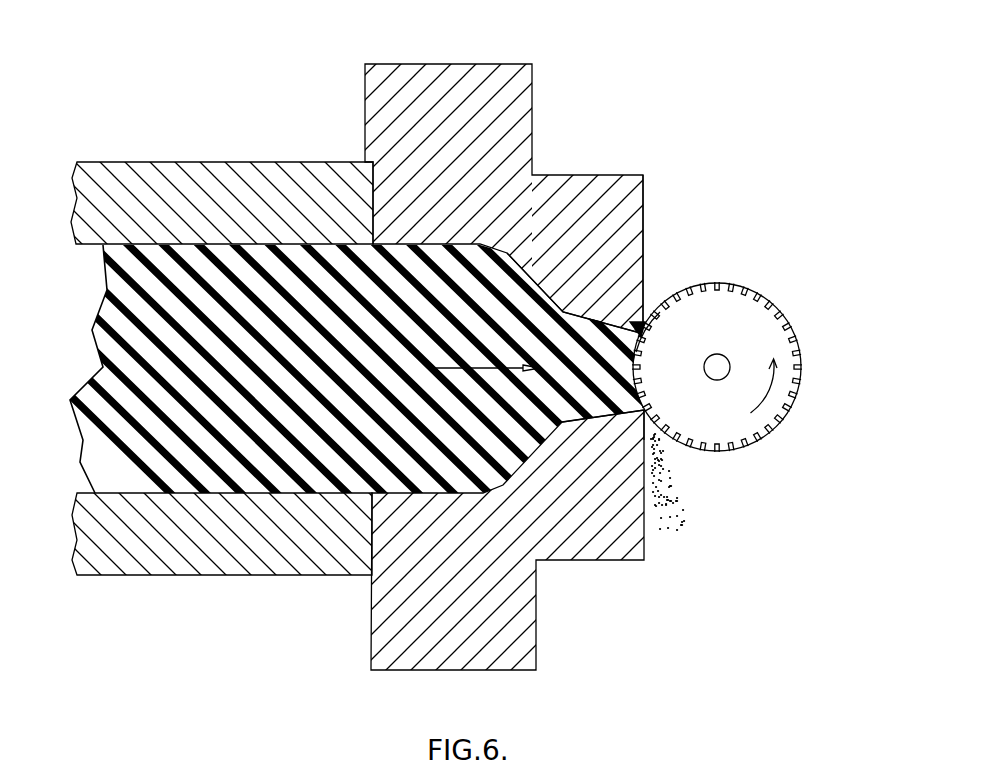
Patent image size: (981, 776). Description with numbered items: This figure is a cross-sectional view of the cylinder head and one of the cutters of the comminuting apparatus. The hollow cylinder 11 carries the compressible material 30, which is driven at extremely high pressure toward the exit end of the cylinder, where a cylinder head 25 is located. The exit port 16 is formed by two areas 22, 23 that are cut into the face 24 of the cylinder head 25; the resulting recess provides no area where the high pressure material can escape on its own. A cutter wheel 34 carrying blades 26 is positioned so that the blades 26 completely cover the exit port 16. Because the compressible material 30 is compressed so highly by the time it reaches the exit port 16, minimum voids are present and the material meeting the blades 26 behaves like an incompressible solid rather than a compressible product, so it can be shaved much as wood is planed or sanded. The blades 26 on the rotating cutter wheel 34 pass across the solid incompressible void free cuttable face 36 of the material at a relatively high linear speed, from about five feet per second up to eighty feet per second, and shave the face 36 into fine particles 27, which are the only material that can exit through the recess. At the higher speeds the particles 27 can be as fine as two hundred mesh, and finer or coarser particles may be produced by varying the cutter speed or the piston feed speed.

The hollow cylinder 11 is at (278, 185).
The cylinder head 25 is at (435, 63).
The face 24 is at (643, 225).
The area of exit port 22 is at (643, 328).
The solid incompressible void free cuttable face 36 is at (643, 346).
The blades 26 is at (780, 310).
The compressible material 30 is at (147, 327).
The cutter wheel 34 is at (747, 445).
The area of exit port 23 is at (645, 412).
The particles 27 is at (673, 515).
The exit port 16 is at (643, 410).